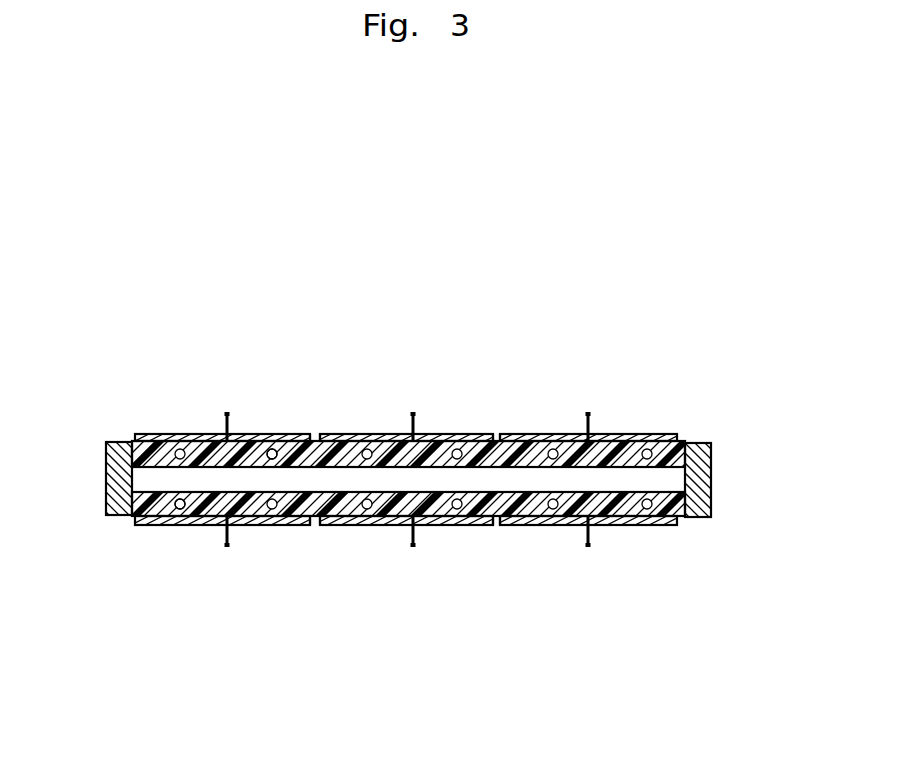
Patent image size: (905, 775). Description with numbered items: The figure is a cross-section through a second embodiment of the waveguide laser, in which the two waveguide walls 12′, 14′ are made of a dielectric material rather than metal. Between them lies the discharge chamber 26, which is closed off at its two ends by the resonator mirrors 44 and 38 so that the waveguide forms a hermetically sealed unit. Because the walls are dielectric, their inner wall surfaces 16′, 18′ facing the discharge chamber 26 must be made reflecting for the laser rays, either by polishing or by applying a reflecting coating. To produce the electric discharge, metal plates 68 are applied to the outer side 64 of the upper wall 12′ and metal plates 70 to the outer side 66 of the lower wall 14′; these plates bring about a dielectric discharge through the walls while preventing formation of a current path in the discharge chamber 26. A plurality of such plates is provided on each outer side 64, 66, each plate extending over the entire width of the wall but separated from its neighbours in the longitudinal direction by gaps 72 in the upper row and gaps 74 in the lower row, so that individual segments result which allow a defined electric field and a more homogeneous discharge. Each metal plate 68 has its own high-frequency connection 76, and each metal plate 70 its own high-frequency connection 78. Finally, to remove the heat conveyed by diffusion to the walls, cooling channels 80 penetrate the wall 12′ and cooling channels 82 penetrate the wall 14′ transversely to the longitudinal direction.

The wall 12′ is at (359, 450).
The wall 14′ is at (318, 522).
The wall surface 16′ is at (451, 467).
The wall surface 18′ is at (443, 496).
The discharge chamber 26 is at (155, 480).
The resonator mirror 38 is at (706, 503).
The resonator mirror 44 is at (113, 472).
The outer side 64 is at (537, 437).
The outer side 66 is at (530, 522).
The metal plate 68 is at (255, 435).
The metal plate 70 is at (713, 673).
The gap 72 is at (315, 438).
The gap 74 is at (313, 518).
The high-frequency connection 76 is at (227, 412).
The high-frequency connection 78 is at (638, 673).
The cooling channel 80 is at (266, 460).
The cooling channel 82 is at (172, 500).